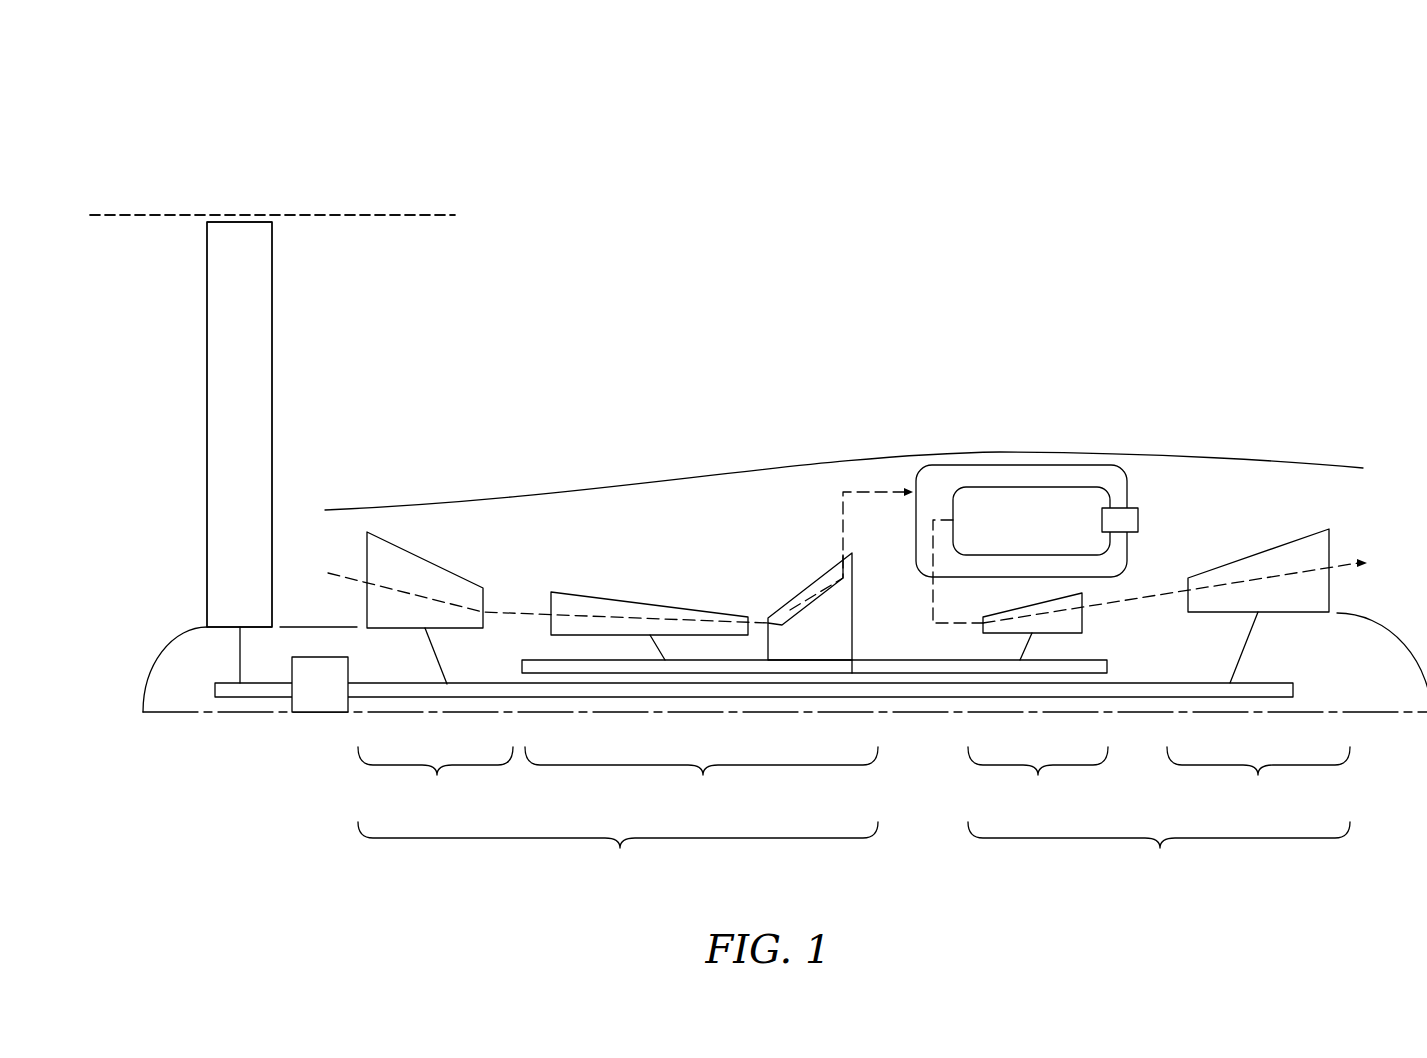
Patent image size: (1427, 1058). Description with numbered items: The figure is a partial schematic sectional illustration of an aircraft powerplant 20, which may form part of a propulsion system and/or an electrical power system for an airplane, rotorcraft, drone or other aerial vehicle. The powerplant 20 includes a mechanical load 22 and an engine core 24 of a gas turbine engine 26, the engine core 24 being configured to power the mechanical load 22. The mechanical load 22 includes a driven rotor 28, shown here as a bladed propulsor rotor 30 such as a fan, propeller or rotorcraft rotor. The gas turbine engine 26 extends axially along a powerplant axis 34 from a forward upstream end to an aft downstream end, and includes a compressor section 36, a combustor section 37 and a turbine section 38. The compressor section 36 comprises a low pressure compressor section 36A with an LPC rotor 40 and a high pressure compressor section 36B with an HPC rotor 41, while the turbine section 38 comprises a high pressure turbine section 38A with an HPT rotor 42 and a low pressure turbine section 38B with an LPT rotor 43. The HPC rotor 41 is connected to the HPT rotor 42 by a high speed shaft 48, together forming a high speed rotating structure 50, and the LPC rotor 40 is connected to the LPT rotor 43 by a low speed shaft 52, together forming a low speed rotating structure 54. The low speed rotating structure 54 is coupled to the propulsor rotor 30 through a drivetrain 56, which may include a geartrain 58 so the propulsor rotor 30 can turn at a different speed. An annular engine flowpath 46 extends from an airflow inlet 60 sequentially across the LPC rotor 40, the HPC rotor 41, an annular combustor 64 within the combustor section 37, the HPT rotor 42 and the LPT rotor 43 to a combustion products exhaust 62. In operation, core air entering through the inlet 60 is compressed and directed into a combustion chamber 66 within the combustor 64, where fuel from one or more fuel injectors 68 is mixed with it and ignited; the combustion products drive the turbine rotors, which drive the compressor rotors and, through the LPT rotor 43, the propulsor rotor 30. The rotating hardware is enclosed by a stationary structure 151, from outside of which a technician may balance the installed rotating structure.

The aircraft powerplant 20 is at (156, 104).
The mechanical load 22 is at (243, 192).
The engine core 24 is at (922, 852).
The gas turbine engine 26 is at (908, 196).
The rotor 28 is at (207, 545).
The propulsor rotor 30 is at (239, 424).
The powerplant axis 34 is at (155, 715).
The compressor section 36 is at (618, 852).
The low pressure compressor section 36A is at (435, 779).
The high pressure compressor section 36B is at (701, 779).
The combustor section 37 is at (1050, 440).
The turbine section 38 is at (1159, 852).
The high pressure turbine section 38A is at (1038, 779).
The low pressure turbine section 38B is at (1258, 779).
The low pressure compressor rotor 40 is at (436, 563).
The high pressure compressor rotor 41 is at (777, 618).
The high pressure turbine rotor 42 is at (1085, 622).
The low pressure turbine rotor 43 is at (1330, 588).
The engine flowpath 46 is at (840, 510).
The high speed shaft 48 is at (892, 657).
The high speed rotating structure 50 is at (1125, 668).
The low speed shaft 52 is at (907, 697).
The low speed rotating structure 54 is at (1294, 668).
The drivetrain 56 is at (318, 732).
The geartrain 58 is at (308, 700).
The airflow inlet 60 is at (328, 573).
The combustion products exhaust 62 is at (1373, 563).
The combustor 64 is at (997, 487).
The combustion chamber 66 is at (1020, 536).
The fuel injector 68 is at (1143, 519).
The stationary structure 151 is at (1218, 457).